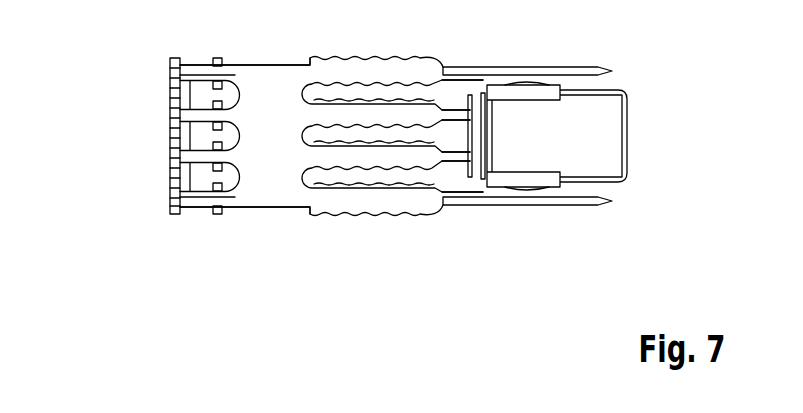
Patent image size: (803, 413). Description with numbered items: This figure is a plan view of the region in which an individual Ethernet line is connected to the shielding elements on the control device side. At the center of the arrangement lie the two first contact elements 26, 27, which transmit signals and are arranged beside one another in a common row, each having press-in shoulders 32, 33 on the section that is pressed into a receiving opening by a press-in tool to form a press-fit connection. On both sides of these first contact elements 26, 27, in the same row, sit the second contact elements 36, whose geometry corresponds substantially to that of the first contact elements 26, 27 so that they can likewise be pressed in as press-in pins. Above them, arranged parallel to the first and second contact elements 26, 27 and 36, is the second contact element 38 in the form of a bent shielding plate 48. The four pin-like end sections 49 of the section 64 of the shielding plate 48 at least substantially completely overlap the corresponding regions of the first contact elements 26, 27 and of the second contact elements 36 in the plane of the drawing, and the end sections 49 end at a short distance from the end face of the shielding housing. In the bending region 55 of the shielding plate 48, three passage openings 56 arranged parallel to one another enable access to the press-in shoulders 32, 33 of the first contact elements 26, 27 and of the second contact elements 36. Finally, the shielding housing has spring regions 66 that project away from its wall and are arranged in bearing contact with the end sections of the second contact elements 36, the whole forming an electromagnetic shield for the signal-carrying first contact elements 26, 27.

The bending region 55 is at (158, 201).
The passage openings 56 is at (172, 173).
The press-in shoulder 33 is at (248, 72).
The press-in shoulder 32 is at (228, 121).
The second contact element 38 is at (268, 92).
The shielding plate 48 is at (245, 136).
The section of the shielding plate 64 is at (259, 189).
The pin-like end sections 49 is at (432, 112).
The first contact element 27 is at (456, 103).
The first contact element 26 is at (456, 165).
The spring regions 66 is at (518, 78).
The second contact element 36 is at (565, 68).